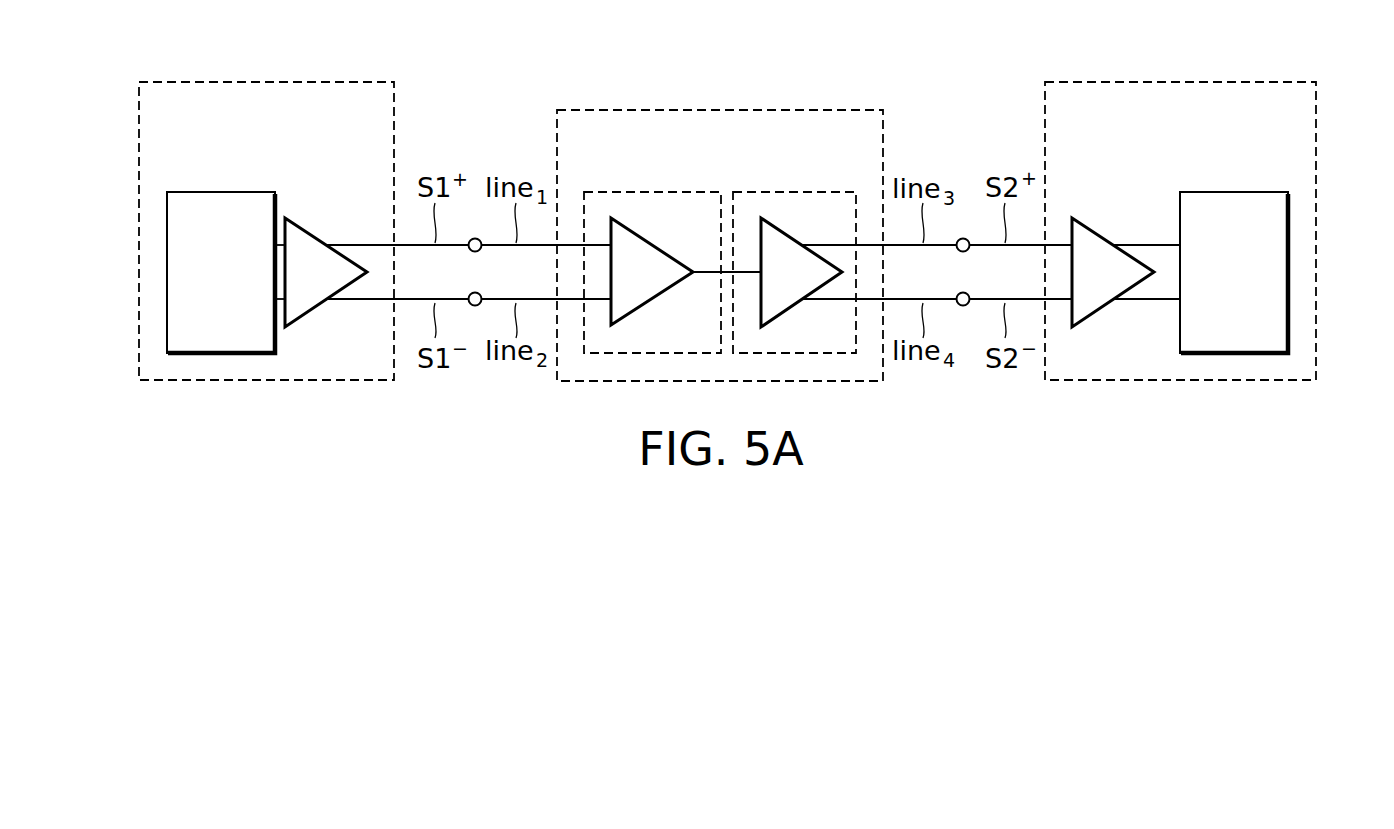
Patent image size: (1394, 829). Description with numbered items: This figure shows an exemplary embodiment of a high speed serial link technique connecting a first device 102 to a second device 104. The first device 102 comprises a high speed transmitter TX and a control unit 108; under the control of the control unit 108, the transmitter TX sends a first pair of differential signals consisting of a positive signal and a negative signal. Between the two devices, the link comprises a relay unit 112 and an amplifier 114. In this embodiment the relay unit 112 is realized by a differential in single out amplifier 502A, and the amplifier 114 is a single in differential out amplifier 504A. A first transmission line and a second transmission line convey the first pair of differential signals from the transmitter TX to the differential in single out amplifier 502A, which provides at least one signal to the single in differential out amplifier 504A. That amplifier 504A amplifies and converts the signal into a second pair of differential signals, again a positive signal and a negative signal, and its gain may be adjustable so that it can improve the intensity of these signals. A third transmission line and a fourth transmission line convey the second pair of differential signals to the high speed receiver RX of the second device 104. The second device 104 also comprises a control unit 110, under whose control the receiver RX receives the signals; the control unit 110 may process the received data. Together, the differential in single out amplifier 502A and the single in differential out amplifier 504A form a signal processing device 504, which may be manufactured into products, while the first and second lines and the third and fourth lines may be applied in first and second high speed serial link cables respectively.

The first device 102 is at (243, 82).
The second device 104 is at (1180, 82).
The control unit 108 is at (167, 272).
The control unit 110 is at (1288, 272).
The signal processing device 504 is at (722, 110).
The relay unit 112 is at (652, 239).
The amplifier 114 is at (794, 239).
The differential in single out amplifier 502A is at (652, 271).
The single in differential out amplifier 504A is at (801, 272).